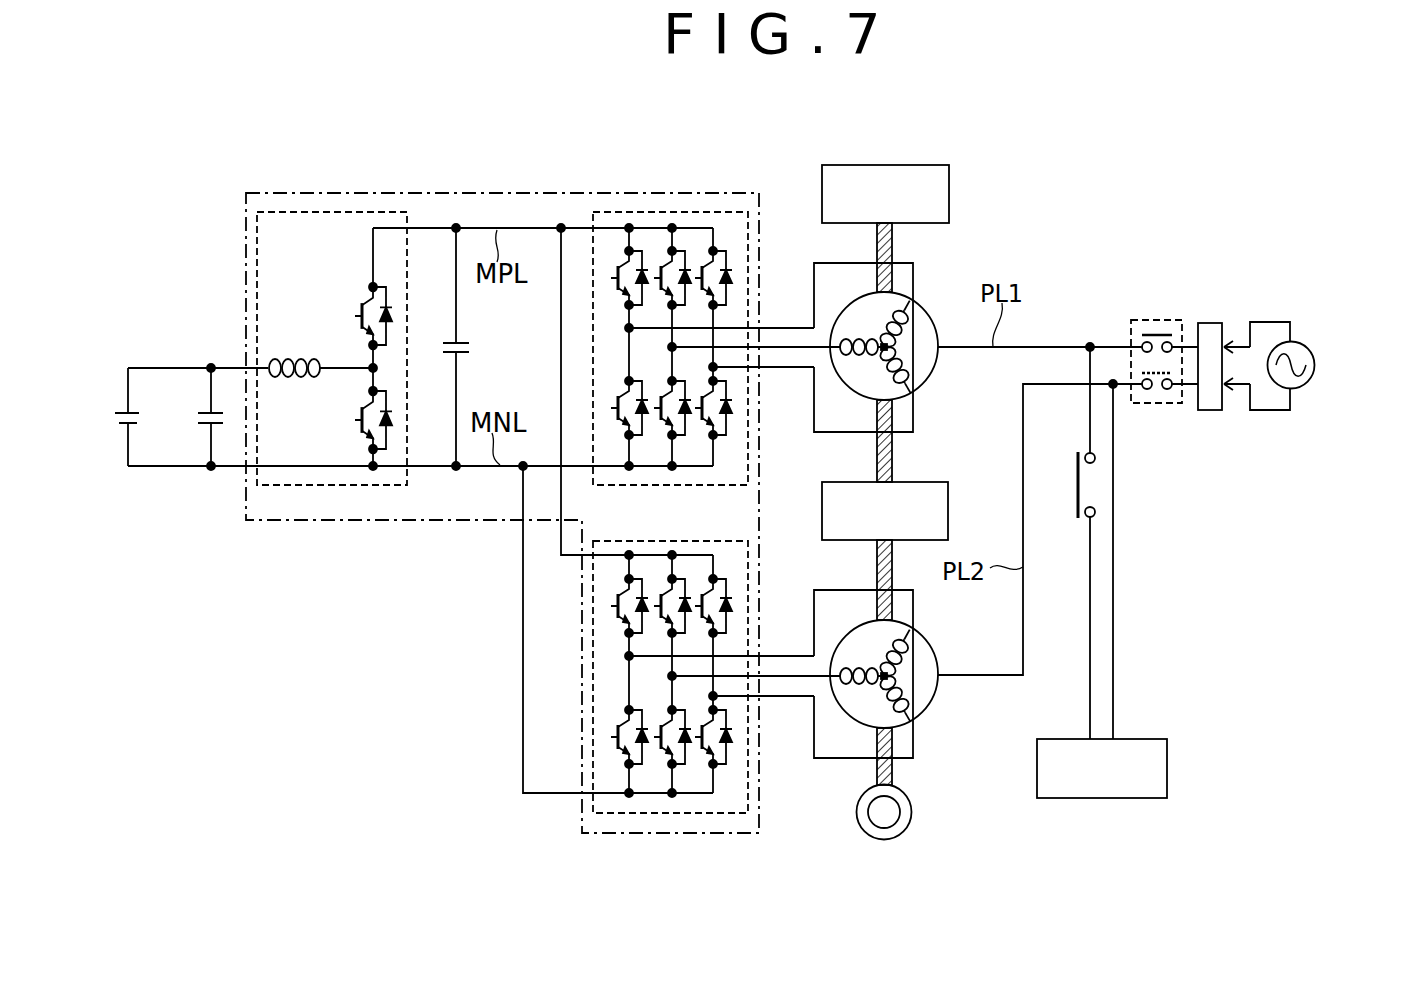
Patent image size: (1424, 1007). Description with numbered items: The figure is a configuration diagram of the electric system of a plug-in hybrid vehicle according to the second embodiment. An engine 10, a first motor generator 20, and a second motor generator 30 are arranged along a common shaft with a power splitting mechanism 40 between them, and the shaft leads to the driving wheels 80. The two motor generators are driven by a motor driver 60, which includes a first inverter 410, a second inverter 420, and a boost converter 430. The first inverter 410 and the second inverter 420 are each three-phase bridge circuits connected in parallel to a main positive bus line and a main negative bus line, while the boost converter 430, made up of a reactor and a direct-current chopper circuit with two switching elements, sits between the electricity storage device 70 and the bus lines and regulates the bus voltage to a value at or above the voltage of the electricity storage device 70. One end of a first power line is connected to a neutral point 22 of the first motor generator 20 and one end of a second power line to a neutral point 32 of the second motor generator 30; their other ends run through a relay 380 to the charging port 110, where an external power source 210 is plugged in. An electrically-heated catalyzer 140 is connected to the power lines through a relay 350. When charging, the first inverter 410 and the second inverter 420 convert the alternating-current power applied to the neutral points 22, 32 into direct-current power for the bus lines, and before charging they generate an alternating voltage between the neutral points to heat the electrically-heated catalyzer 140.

The engine 10 is at (949, 193).
The first motor generator 20 is at (930, 380).
The neutral point of the first MG 22 is at (882, 345).
The second motor generator 30 is at (930, 710).
The neutral point of the second MG 32 is at (882, 672).
The power splitting mechanism 40 is at (822, 510).
The motor driver 60 is at (565, 193).
The electricity storage device 70 is at (120, 410).
The driving wheels 80 is at (912, 812).
The charging port 110 is at (1208, 323).
The electrically-heated catalyzer 140 is at (1103, 798).
The external power source 210 is at (1315, 365).
The relay 350 is at (1075, 470).
The relay 380 is at (1155, 320).
The first inverter 410 is at (673, 212).
The second inverter 420 is at (673, 815).
The boost converter 430 is at (330, 212).